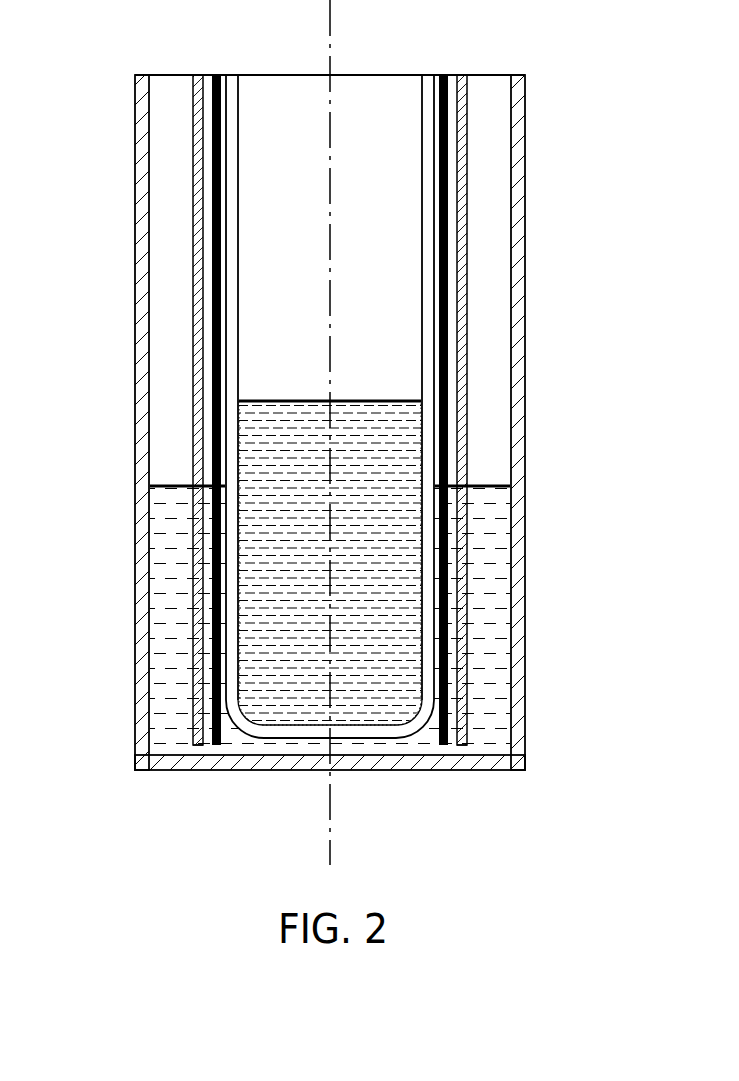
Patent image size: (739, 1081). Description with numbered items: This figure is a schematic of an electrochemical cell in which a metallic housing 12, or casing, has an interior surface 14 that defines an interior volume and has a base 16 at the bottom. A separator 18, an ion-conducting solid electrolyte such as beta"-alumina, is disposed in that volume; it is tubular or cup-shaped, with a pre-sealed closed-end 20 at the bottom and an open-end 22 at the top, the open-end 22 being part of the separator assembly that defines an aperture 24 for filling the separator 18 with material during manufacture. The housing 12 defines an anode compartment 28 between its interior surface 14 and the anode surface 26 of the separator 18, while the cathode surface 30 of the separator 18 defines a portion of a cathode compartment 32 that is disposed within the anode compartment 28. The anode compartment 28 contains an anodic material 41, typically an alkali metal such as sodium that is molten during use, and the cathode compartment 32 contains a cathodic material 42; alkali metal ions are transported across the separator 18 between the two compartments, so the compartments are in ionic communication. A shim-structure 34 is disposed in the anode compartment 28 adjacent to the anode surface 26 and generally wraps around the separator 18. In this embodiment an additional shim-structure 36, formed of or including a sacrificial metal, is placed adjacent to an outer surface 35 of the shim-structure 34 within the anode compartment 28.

The housing 12 is at (522, 245).
The interior surface 14 is at (499, 343).
The base 16 is at (190, 770).
The separator 18 is at (428, 470).
The closed-end 20 is at (375, 730).
The open-end 22 is at (233, 83).
The aperture 24 is at (295, 83).
The anode surface 26 is at (437, 421).
The anode compartment 28 is at (186, 465).
The cathode surface 30 is at (240, 362).
The cathode compartment 32 is at (298, 295).
The shim-structure 34 is at (217, 750).
The outer surface 35 is at (448, 628).
The additional shim-structure 36 is at (468, 707).
The anodic material 41 is at (173, 643).
The cathodic material 42 is at (270, 588).